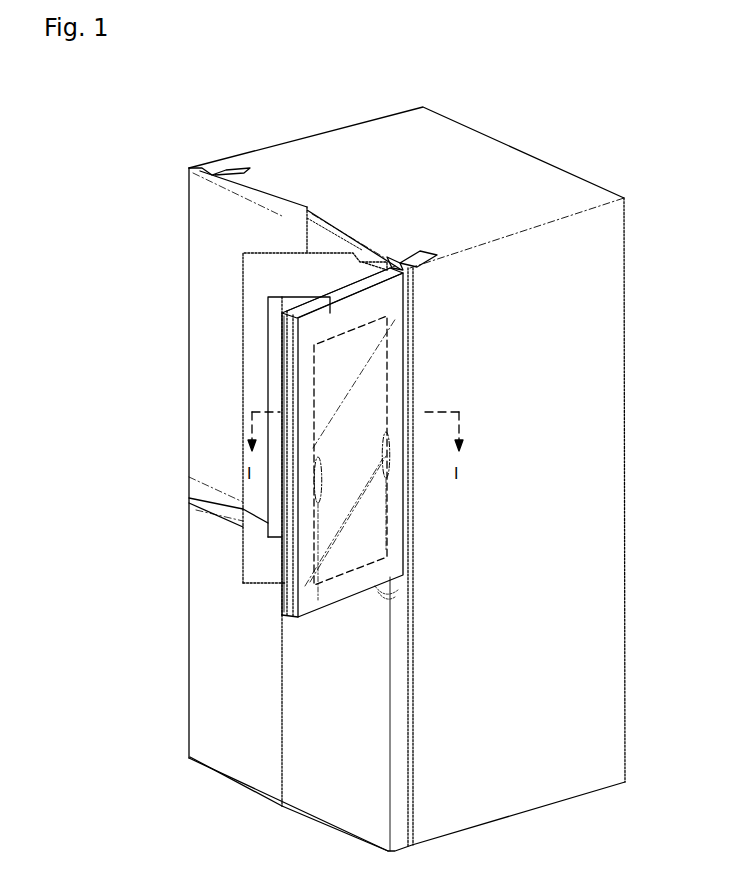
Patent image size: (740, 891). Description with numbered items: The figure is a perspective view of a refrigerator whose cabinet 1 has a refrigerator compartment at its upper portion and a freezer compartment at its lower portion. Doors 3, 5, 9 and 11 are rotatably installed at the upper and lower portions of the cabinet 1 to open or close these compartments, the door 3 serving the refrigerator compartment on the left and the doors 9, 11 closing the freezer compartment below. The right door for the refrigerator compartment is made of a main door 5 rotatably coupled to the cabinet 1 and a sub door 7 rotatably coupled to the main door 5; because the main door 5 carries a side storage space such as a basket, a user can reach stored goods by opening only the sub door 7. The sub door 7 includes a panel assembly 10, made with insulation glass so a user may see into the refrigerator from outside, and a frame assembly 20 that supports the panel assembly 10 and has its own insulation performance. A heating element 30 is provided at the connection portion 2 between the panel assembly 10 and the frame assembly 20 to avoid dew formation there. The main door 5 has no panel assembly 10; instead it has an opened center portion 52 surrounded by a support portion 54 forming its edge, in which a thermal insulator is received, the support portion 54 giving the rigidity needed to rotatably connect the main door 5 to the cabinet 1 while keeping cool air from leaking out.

The cabinet 1 is at (298, 133).
The connection portion 2 is at (320, 464).
The door 3 is at (211, 280).
The main door 5 is at (256, 385).
The sub door 7 is at (284, 547).
The door 9 is at (212, 629).
The panel assembly 10 is at (384, 563).
The door 11 is at (310, 723).
The frame assembly 20 is at (355, 284).
The heating element 30 is at (393, 495).
The center portion 52 is at (296, 299).
The support portion 54 is at (280, 278).